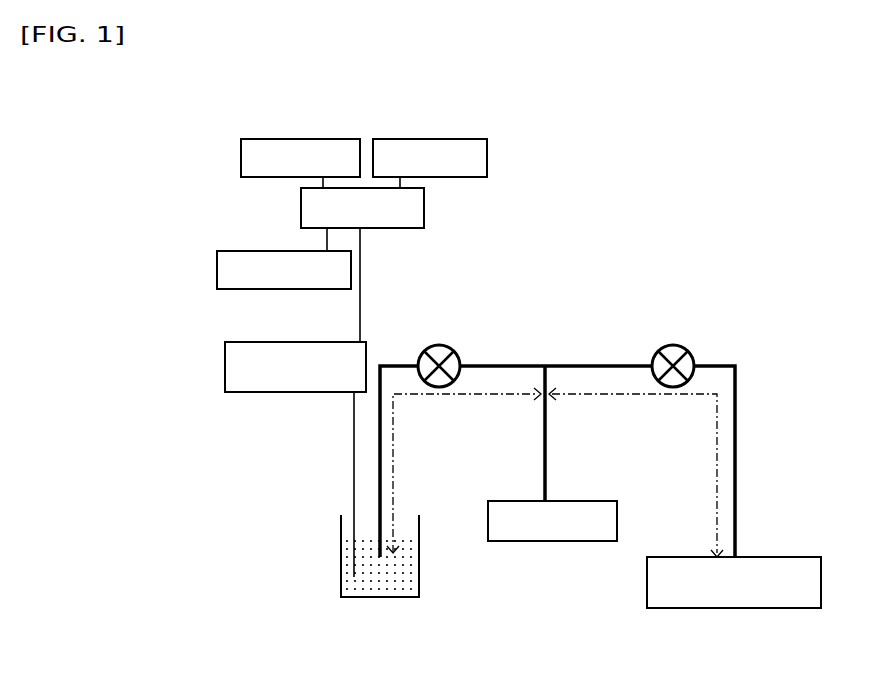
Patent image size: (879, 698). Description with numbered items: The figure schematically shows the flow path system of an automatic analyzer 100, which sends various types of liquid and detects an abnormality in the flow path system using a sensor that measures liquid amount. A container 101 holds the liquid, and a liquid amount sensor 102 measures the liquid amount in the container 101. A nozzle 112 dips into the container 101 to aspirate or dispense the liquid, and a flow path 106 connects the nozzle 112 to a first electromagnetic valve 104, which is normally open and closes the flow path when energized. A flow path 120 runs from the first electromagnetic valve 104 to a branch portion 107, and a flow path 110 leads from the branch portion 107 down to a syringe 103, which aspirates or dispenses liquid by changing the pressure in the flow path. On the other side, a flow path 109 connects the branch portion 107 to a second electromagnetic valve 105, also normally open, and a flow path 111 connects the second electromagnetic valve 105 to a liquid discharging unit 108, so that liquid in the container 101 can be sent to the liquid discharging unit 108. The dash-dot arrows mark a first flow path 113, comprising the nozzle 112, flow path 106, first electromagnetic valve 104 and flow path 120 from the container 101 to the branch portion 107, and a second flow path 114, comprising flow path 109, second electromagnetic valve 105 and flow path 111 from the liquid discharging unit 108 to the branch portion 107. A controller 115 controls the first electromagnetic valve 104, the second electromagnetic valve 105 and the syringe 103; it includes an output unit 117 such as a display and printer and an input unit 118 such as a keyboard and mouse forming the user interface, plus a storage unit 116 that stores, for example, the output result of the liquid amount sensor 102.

The automatic analyzer 100 is at (565, 245).
The container 101 is at (383, 597).
The liquid amount sensor 102 is at (225, 368).
The syringe 103 is at (552, 541).
The first electromagnetic valve 104 is at (437, 345).
The second electromagnetic valve 105 is at (667, 345).
The flow path 106 is at (389, 365).
The branch portion 107 is at (545, 365).
The liquid discharging unit 108 is at (738, 608).
The flow path 109 is at (611, 365).
The flow path 110 is at (566, 450).
The flow path 111 is at (735, 518).
The nozzle 112 is at (382, 516).
The first flow path 113 is at (425, 396).
The second flow path 114 is at (670, 395).
The controller 115 is at (301, 210).
The storage unit 116 is at (217, 265).
The output unit 117 is at (325, 138).
The input unit 118 is at (432, 138).
The flow path 120 is at (500, 365).